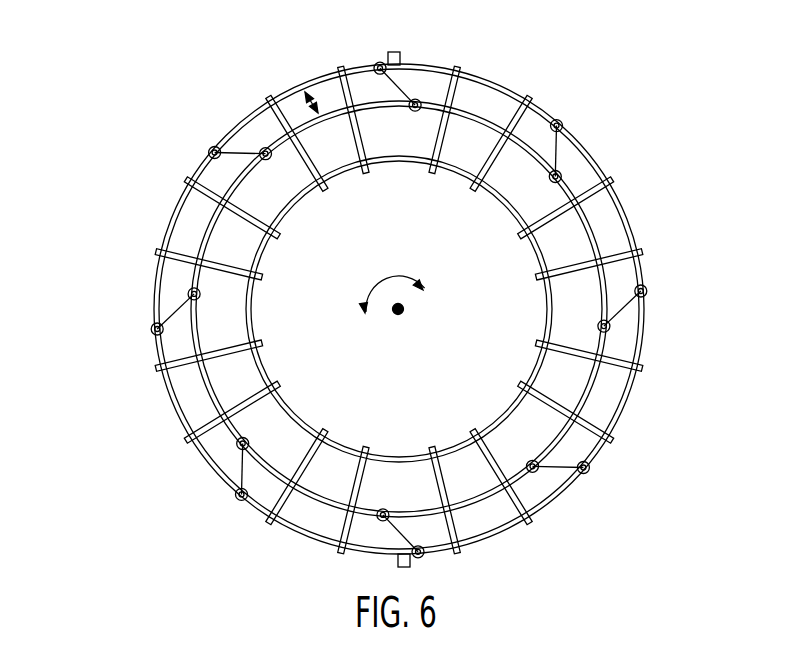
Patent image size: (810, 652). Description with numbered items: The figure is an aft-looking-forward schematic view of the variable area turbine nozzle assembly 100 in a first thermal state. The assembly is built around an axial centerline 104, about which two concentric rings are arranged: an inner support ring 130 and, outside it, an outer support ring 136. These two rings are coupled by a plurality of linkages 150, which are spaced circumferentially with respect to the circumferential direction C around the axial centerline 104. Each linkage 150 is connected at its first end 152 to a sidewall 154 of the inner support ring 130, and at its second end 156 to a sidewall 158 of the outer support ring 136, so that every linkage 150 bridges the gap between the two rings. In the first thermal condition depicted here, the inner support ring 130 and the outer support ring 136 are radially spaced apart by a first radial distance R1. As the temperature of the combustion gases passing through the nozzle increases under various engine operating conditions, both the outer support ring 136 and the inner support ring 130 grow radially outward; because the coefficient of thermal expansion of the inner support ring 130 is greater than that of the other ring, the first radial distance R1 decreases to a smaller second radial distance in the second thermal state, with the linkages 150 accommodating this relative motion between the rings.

The variable area turbine nozzle assembly 100 is at (586, 44).
The axial centerline 104 is at (404, 310).
The inner support ring 130 is at (582, 228).
The outer support ring 136 is at (620, 200).
The linkage 150 is at (173, 301).
The first end 152 is at (200, 291).
The sidewall 154 is at (207, 243).
The second end 156 is at (151, 331).
The sidewall 158 is at (152, 353).
The first radial distance R1 is at (319, 109).
The circumferential direction C is at (385, 278).